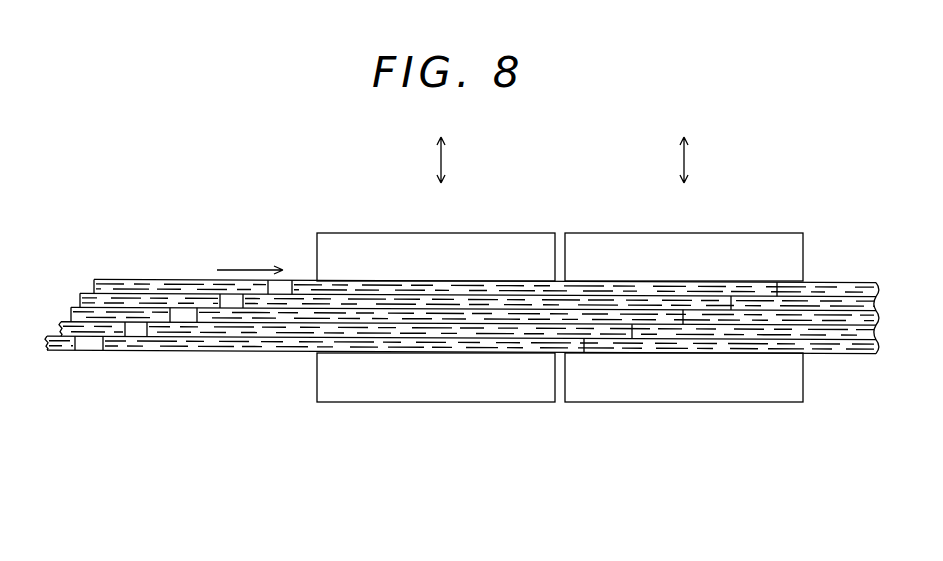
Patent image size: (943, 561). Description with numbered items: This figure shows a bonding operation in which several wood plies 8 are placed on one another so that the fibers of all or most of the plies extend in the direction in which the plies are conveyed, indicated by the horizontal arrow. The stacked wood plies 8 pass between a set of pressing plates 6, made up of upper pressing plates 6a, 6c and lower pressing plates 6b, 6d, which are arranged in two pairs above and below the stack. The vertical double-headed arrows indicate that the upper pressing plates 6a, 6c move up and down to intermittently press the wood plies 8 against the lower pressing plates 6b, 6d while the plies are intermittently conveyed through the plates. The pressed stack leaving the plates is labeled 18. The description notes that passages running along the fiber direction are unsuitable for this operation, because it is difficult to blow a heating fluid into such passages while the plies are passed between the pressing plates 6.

The pressing plates 6 is at (560, 327).
The upper pressing plate 6a is at (498, 233).
The lower pressing plate 6b is at (367, 402).
The upper pressing plate 6c is at (768, 233).
The lower pressing plate 6d is at (722, 403).
The wood plies 8 is at (90, 317).
The laminate 18 is at (462, 345).